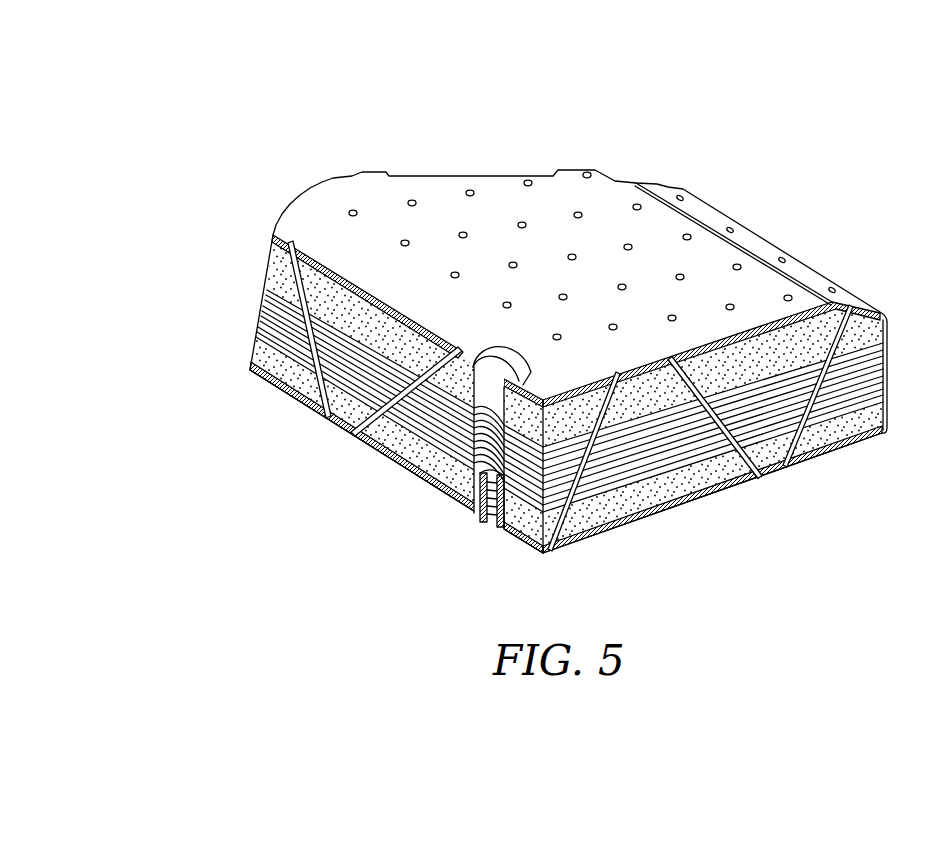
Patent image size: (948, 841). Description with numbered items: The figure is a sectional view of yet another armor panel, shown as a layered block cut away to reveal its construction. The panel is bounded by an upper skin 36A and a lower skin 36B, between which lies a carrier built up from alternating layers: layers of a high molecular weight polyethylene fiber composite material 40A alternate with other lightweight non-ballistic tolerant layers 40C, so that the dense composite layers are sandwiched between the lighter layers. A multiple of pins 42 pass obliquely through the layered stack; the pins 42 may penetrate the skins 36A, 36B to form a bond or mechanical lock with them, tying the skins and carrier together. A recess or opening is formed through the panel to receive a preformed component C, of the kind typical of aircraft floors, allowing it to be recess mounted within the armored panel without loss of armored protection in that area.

The skin 36A is at (492, 222).
The skin 36B is at (847, 452).
The high molecular weight polyethylene fiber composite material layer 40A is at (262, 323).
The lightweight non-ballistic tolerant layer 40C is at (270, 267).
The pin 42 is at (395, 412).
The preformed component C is at (490, 392).